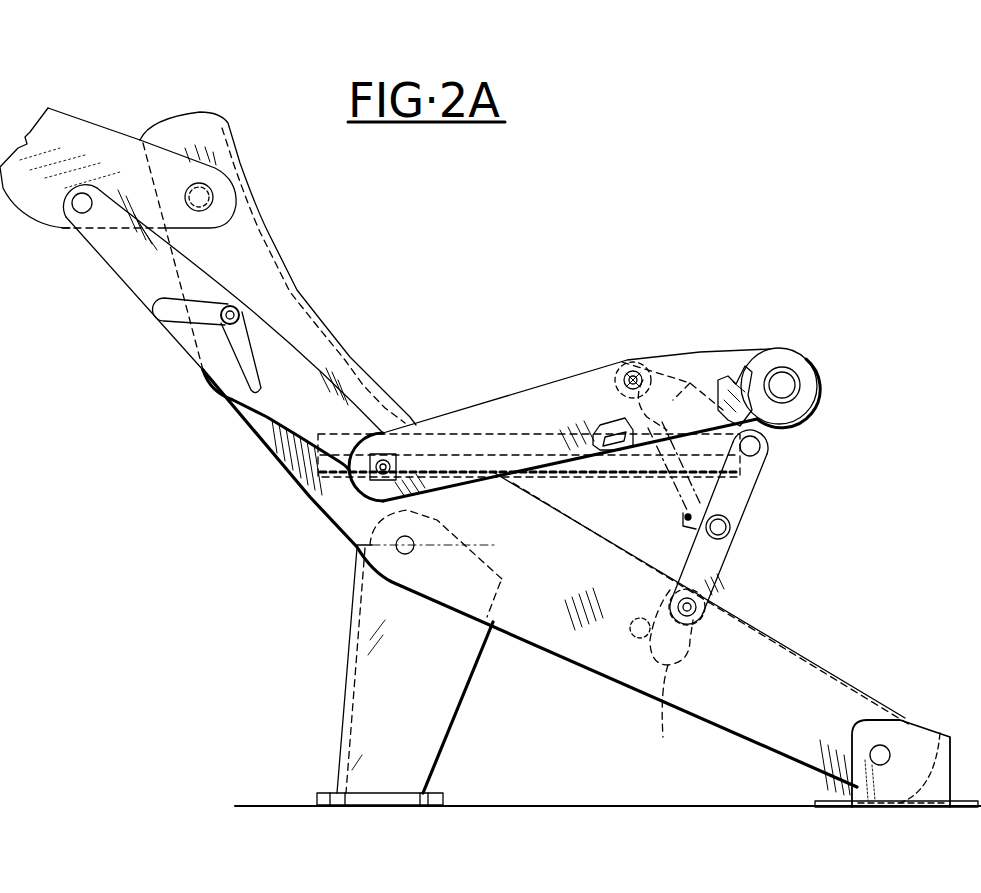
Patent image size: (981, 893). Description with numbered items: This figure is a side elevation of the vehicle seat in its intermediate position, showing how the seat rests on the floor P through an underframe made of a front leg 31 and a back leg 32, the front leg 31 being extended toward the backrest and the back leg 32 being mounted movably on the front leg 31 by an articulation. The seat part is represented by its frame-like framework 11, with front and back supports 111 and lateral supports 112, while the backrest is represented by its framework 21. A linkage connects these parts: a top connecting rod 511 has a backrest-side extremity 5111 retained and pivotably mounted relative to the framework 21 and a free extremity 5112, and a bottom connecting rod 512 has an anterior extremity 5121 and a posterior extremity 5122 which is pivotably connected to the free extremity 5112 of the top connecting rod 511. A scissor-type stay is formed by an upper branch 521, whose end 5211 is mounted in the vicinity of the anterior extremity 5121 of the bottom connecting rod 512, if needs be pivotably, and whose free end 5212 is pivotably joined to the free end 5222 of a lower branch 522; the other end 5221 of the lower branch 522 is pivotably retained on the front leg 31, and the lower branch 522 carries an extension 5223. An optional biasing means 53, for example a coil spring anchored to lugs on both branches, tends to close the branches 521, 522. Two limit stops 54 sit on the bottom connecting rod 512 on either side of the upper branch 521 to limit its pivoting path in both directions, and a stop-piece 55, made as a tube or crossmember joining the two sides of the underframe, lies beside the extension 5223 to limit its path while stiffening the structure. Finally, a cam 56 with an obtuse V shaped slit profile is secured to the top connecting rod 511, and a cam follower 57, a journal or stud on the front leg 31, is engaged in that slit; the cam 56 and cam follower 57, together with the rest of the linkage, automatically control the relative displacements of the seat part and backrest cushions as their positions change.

The floor P is at (245, 806).
The framework 11 is at (568, 484).
The framework 21 is at (95, 175).
The front leg 31 is at (330, 508).
The back leg 32 is at (372, 663).
The biasing means 53 is at (672, 487).
The limit stops 54 is at (606, 425).
The stop-piece 55 is at (640, 638).
The cam 56 is at (175, 308).
The cam follower 57 is at (233, 306).
The front and back supports 111 is at (797, 380).
The lateral supports 112 is at (760, 355).
The top connecting rod 511 is at (323, 323).
The bottom connecting rod 512 is at (513, 393).
The upper branch 521 is at (690, 385).
The lower branch 522 is at (736, 588).
The upper arm pivot pin 5111 is at (95, 215).
The free extremity 5112 is at (327, 450).
The anterior extremity 5121 is at (822, 388).
The posterior extremity 5122 is at (403, 412).
The end 5211 is at (613, 357).
The free end 5212 is at (779, 434).
The end 5221 is at (705, 600).
The free end 5222 is at (770, 452).
The extension 5223 is at (668, 722).